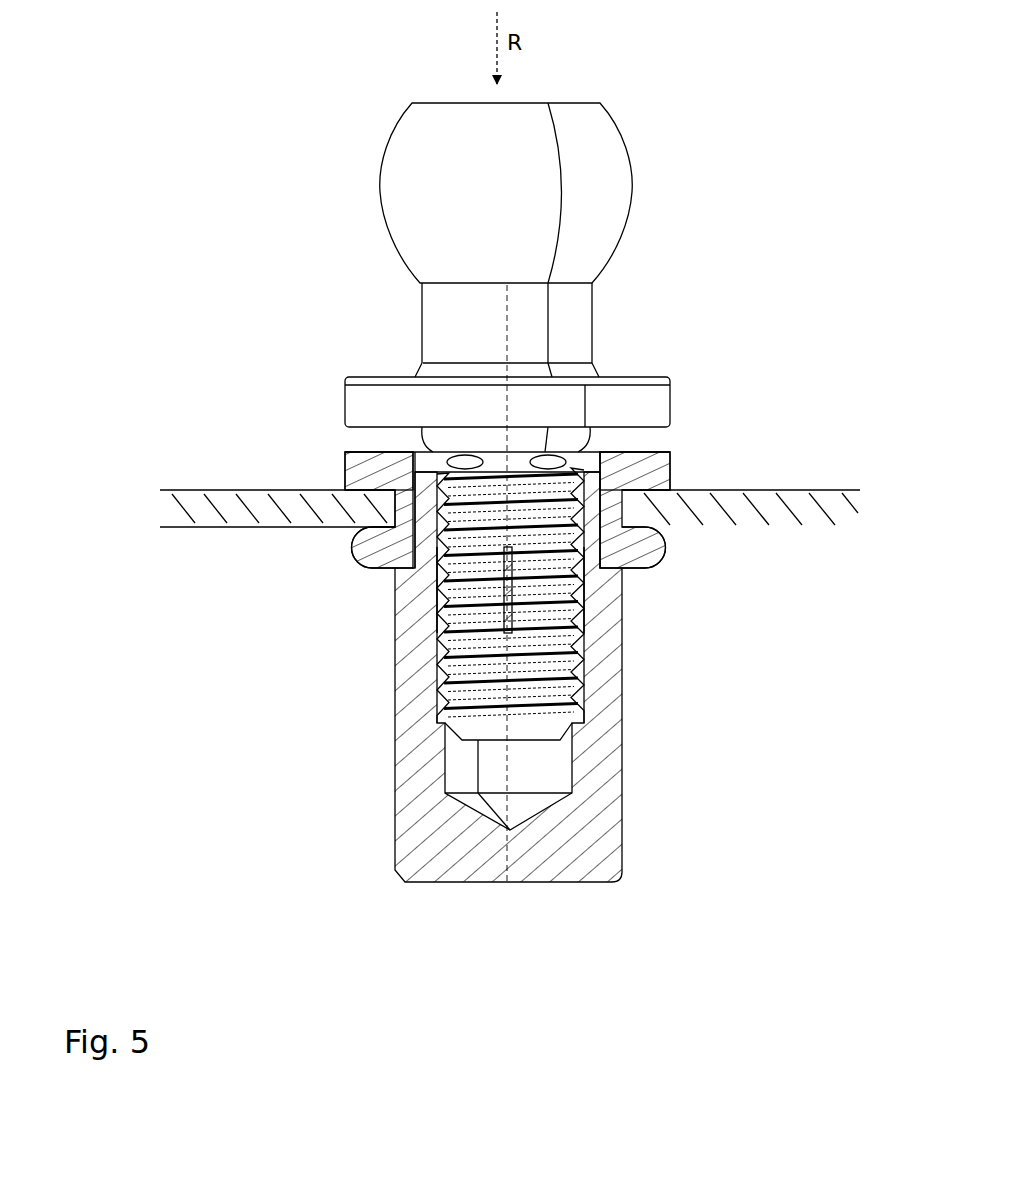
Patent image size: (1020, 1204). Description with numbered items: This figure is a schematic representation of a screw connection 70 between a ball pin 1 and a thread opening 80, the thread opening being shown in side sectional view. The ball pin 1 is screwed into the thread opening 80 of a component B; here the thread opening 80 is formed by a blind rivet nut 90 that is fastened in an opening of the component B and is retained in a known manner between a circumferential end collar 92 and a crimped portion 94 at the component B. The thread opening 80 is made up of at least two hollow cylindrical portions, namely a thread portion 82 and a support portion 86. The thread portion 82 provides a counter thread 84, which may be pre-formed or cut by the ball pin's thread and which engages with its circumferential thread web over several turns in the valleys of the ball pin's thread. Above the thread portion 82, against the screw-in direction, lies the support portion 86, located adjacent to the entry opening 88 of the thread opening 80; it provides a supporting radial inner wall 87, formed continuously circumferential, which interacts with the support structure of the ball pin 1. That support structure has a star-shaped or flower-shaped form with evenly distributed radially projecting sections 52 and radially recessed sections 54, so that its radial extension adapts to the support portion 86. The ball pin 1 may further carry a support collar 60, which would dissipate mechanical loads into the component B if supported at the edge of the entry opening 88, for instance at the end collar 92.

The ball pin 1 is at (665, 226).
The screw connection 70 is at (678, 73).
The support collar 60 is at (657, 404).
The radially projecting sections 52 is at (585, 450).
The radially recessed sections 54 is at (430, 447).
The entry opening 88 is at (425, 456).
The end collar 92 is at (655, 462).
The supporting radial inner wall 87 is at (670, 487).
The component B is at (780, 520).
The support portion 86 is at (395, 497).
The blind rivet nut 90 is at (395, 612).
The crimped portion 94 is at (356, 547).
The thread portion 82 is at (580, 623).
The counter thread 84 is at (565, 660).
The thread opening 80 is at (560, 773).